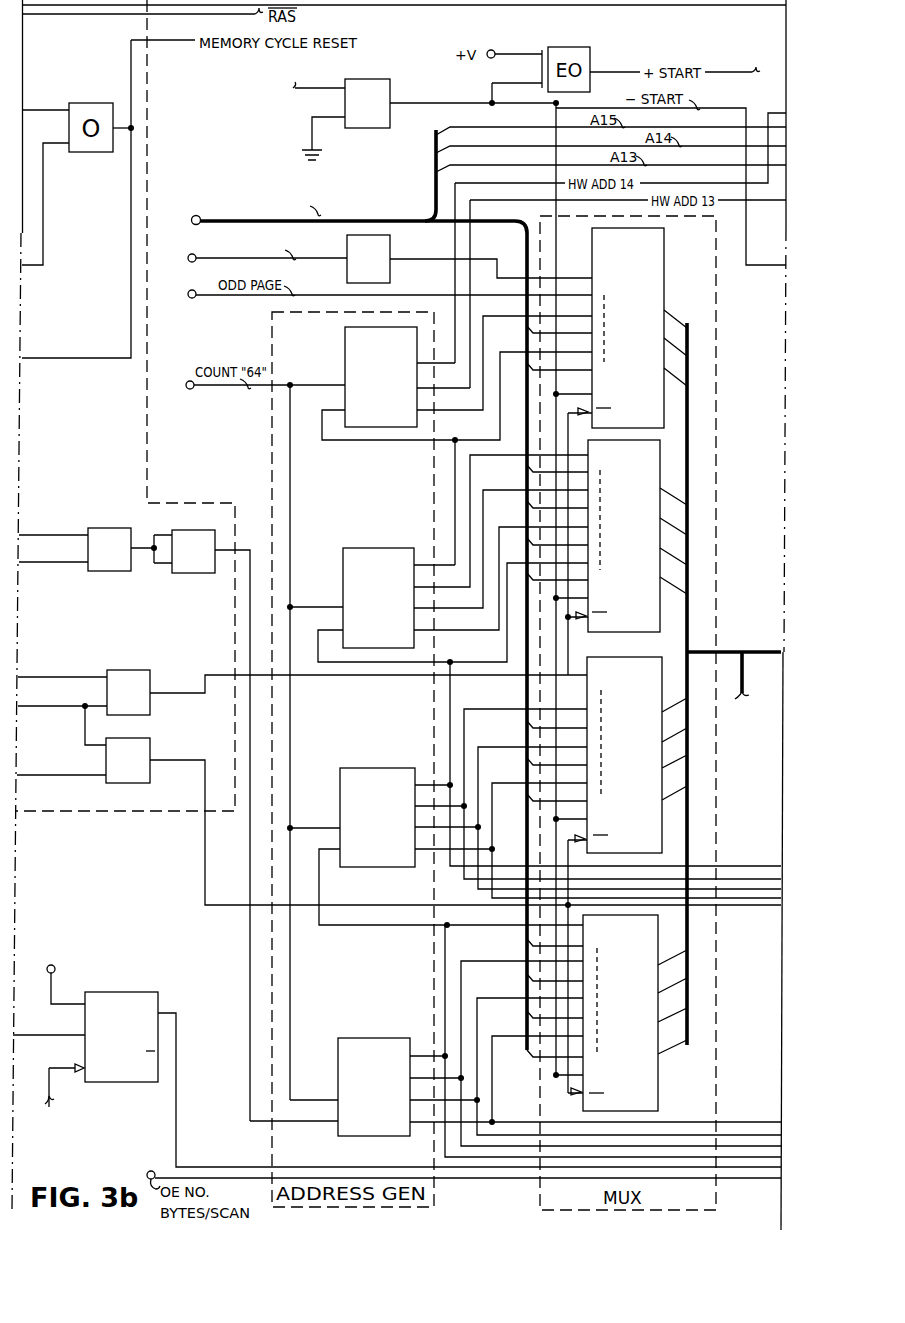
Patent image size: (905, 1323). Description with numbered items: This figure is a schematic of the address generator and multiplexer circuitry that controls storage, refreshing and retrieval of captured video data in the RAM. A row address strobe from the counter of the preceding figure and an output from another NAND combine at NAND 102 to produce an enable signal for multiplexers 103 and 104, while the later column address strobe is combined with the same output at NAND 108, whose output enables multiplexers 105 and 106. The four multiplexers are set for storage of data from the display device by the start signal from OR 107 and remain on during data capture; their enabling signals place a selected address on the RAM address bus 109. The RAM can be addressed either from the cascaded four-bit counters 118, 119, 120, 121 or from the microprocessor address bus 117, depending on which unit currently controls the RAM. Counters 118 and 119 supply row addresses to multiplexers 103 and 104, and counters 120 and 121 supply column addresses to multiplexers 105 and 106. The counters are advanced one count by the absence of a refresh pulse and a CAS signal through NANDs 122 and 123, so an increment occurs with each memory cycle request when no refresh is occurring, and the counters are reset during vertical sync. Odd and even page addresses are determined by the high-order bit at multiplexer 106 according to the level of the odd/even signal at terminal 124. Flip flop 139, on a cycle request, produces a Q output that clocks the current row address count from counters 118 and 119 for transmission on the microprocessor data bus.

The NAND 102 is at (150, 746).
The multiplexer 103 is at (660, 1090).
The multiplexer 104 is at (662, 826).
The multiplexer 105 is at (660, 462).
The multiplexer 106 is at (664, 262).
The OR 107 is at (390, 84).
The NAND 108 is at (124, 670).
The RAM address bus 109 is at (754, 650).
The microprocessor address bus 117 is at (193, 216).
The counter 118 is at (375, 1038).
The counter 119 is at (377, 768).
The counter 120 is at (379, 548).
The counter 121 is at (345, 338).
The NAND 122 is at (112, 521).
The NAND 123 is at (192, 530).
The terminal 124 is at (188, 259).
The flip flop 139 is at (126, 992).